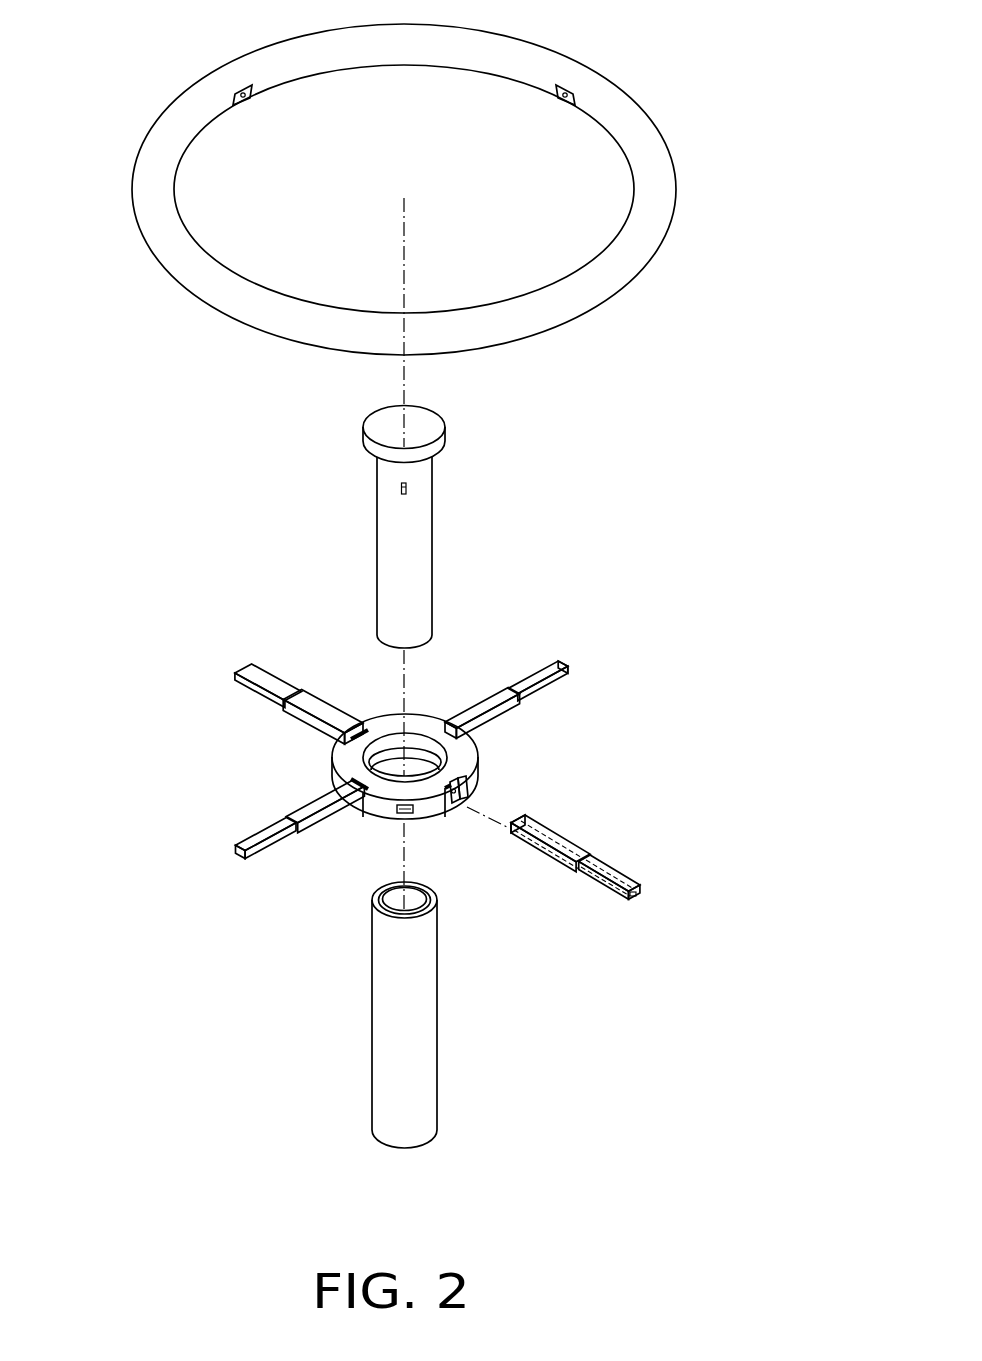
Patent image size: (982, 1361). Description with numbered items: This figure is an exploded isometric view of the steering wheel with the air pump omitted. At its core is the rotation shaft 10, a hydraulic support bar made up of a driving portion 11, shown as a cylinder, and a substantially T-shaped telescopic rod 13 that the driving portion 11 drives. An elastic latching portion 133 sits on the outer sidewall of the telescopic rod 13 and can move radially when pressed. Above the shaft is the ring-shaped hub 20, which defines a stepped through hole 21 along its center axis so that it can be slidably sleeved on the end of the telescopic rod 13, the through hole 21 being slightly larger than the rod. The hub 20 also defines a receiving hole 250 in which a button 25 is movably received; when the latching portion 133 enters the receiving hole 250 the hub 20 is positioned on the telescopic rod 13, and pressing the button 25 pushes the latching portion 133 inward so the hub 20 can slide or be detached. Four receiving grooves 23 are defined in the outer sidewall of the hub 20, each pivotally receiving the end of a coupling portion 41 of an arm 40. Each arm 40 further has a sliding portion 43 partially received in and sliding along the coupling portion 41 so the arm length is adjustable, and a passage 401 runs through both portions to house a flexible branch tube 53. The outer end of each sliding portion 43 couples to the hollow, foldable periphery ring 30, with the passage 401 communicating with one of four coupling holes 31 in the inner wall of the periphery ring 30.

The rotation shaft 10 is at (420, 527).
The driving portion 11 is at (422, 1053).
The telescopic rod 13 is at (405, 552).
The latching portion 133 is at (399, 488).
The hub 20 is at (419, 770).
The through hole 21 is at (419, 752).
The receiving groove 23 is at (477, 790).
The button 25 is at (390, 844).
The receiving hole 250 is at (394, 817).
The periphery ring 30 is at (452, 189).
The coupling hole 31 is at (571, 88).
The arm 40 is at (626, 874).
The coupling portion 41 is at (569, 843).
The sliding portion 43 is at (619, 873).
The branch tube 53 is at (639, 898).
The passage 401 is at (632, 900).